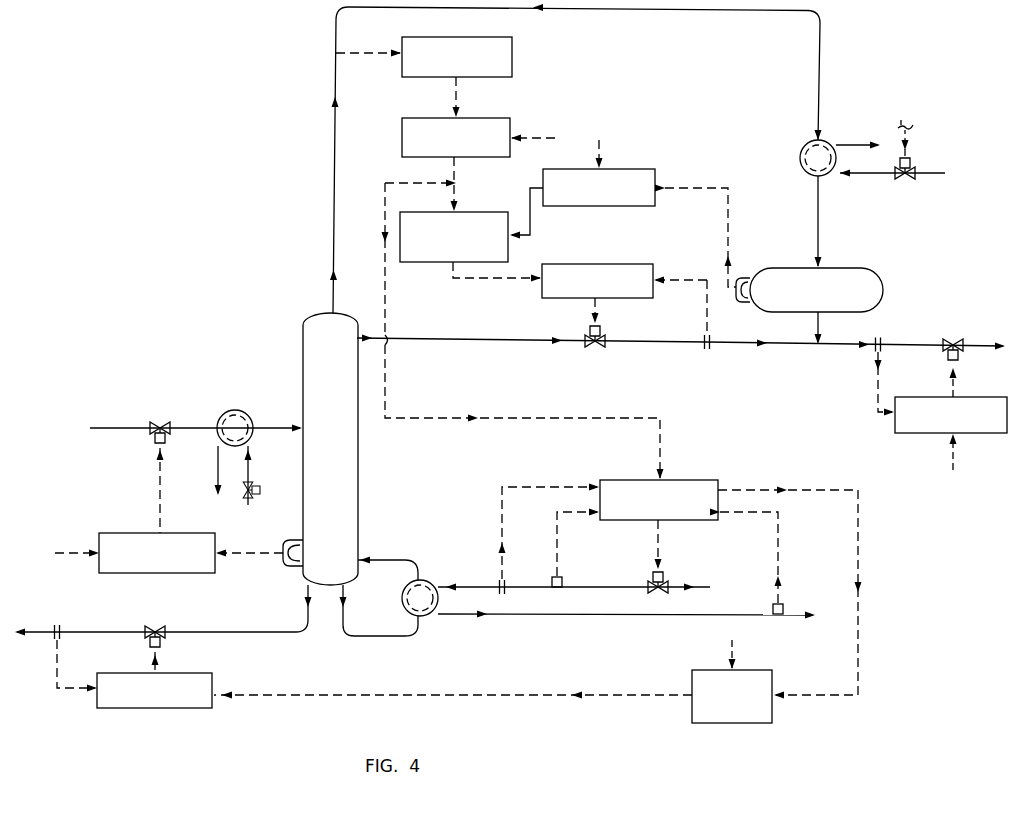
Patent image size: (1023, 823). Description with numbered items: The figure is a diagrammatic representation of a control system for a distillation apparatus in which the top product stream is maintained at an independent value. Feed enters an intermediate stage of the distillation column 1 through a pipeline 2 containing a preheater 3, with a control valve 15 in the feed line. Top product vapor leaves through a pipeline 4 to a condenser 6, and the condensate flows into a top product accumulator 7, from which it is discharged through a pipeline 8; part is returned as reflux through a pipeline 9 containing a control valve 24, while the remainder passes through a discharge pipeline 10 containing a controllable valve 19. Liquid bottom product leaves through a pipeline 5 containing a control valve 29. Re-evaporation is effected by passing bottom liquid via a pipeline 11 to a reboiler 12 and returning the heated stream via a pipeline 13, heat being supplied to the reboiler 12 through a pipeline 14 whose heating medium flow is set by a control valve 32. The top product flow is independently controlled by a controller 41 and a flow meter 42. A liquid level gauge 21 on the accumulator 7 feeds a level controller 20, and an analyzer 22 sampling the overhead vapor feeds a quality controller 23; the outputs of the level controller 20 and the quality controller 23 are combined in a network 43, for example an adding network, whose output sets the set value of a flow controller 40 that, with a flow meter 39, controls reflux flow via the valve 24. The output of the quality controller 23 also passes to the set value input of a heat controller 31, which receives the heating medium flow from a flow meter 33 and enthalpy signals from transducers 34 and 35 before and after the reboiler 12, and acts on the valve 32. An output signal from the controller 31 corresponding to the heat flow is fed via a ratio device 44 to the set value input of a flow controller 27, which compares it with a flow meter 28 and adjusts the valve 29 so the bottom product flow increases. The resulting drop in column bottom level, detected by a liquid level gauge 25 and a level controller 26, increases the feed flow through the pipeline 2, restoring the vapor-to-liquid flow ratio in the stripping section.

The distillation column 1 is at (331, 448).
The feed pipeline 2 is at (270, 430).
The preheater 3 is at (240, 412).
The top product discharge pipeline 4 is at (637, 10).
The bottom product pipeline 5 is at (276, 633).
The condenser 6 is at (803, 150).
The top product accumulator 7 is at (843, 268).
The accumulator discharge pipeline 8 is at (812, 320).
The reflux pipeline 9 is at (508, 342).
The top product discharge pipeline 10 is at (837, 342).
The reboiler feed pipeline 11 is at (390, 636).
The reboiler 12 is at (402, 591).
The reboiler return pipeline 13 is at (383, 560).
The heating medium pipeline 14 is at (572, 616).
The feed control valve 15 is at (162, 422).
The top product control valve 19 is at (955, 339).
The level controller 20 is at (612, 170).
The liquid level gauge 21 is at (738, 303).
The analyzer 22 is at (512, 60).
The quality controller 23 is at (511, 133).
The reflux control valve 24 is at (601, 348).
The liquid level gauge 25 is at (283, 562).
The level controller 26 is at (182, 533).
The flow controller 27 is at (174, 673).
The flow meter 28 is at (48, 612).
The bottom product control valve 29 is at (155, 625).
The heat controller 31 is at (690, 480).
The heating medium control valve 32 is at (650, 592).
The flow meter 33 is at (508, 592).
The transducer 34 is at (563, 580).
The transducer 35 is at (785, 610).
The flow meter 39 is at (713, 350).
The flow controller 40 is at (612, 264).
The flow controller 41 is at (972, 397).
The flow meter 42 is at (870, 350).
The combining network 43 is at (470, 212).
The ratio adjusting device 44 is at (747, 723).